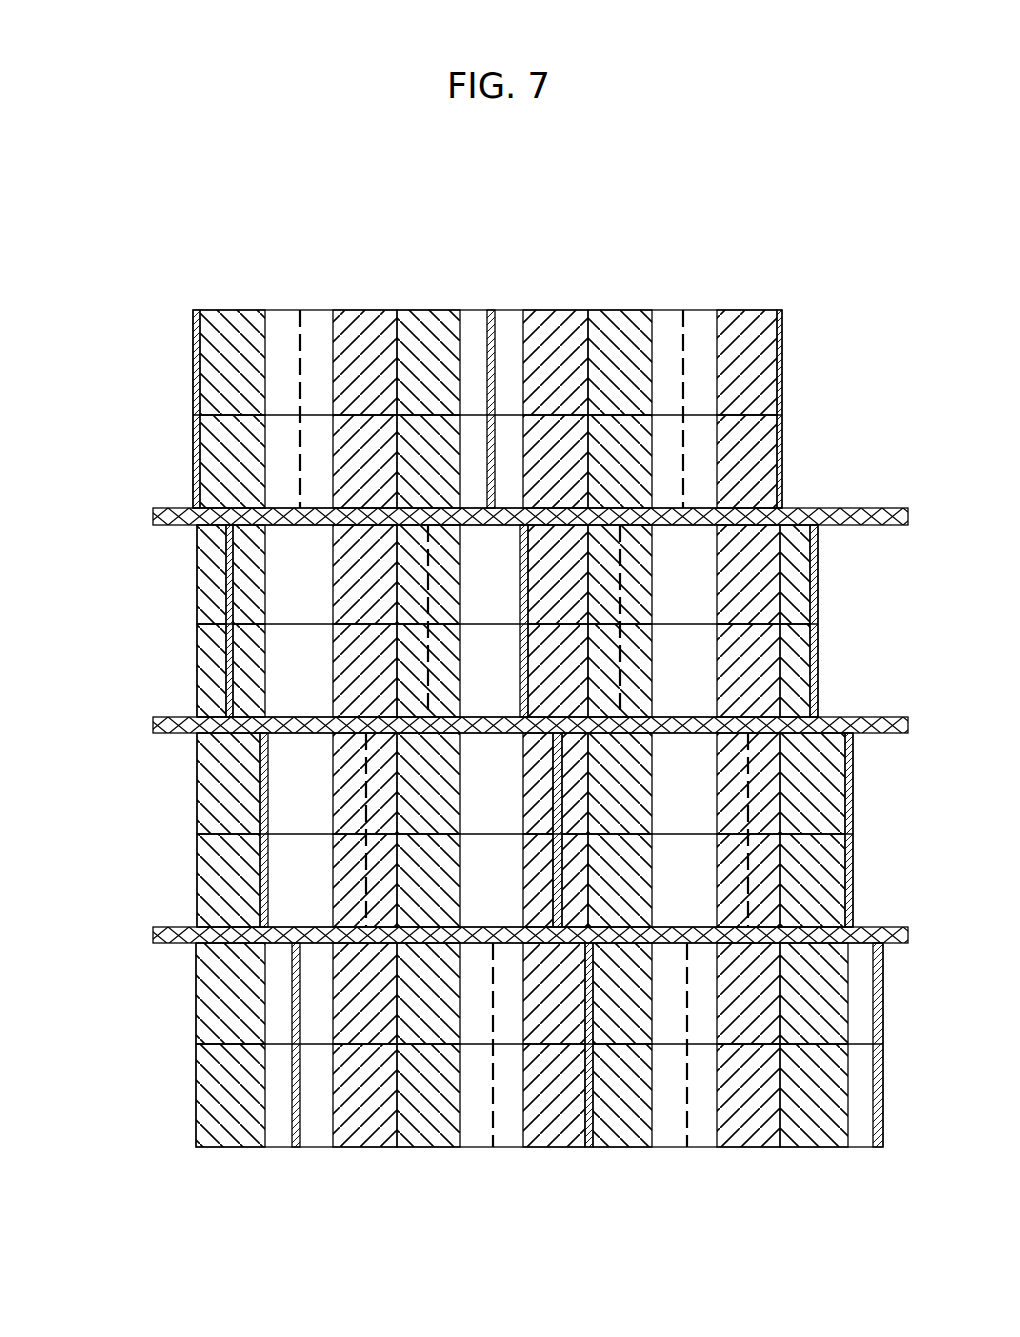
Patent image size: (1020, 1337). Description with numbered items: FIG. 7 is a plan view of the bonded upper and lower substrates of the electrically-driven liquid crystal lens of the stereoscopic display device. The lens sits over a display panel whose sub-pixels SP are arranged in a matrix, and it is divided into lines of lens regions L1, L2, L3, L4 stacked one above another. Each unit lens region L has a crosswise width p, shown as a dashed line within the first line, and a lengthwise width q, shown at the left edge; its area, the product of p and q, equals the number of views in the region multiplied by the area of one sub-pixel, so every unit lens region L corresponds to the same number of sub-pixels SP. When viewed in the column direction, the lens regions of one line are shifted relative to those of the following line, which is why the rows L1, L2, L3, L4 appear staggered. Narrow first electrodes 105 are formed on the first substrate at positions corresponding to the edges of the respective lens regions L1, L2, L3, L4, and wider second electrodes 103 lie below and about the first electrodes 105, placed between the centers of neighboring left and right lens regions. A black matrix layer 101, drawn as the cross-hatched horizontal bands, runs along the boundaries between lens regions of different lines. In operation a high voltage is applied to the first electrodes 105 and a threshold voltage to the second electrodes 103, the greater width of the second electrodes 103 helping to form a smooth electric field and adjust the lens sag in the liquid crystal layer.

The black matrix layer 101 is at (866, 510).
The second electrodes 103 is at (587, 310).
The first electrodes 105 is at (303, 1147).
The unit lens region L is at (341, 369).
The crosswise width p is at (298, 409).
The lengthwise width q is at (193, 312).
The sub-pixel SP is at (750, 1140).
The lens region L1 is at (456, 371).
The lens region L2 is at (507, 621).
The lens region L3 is at (525, 830).
The lens region L4 is at (539, 1085).